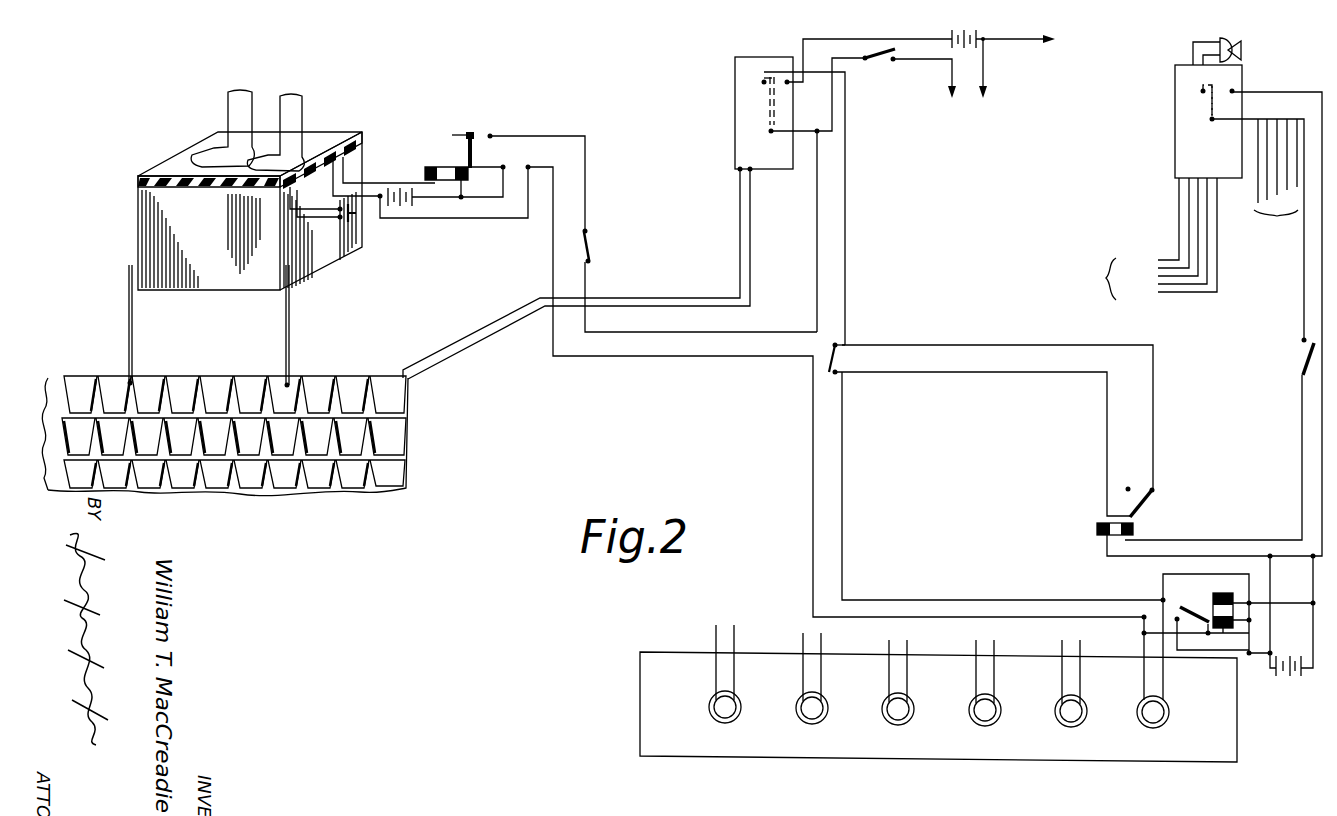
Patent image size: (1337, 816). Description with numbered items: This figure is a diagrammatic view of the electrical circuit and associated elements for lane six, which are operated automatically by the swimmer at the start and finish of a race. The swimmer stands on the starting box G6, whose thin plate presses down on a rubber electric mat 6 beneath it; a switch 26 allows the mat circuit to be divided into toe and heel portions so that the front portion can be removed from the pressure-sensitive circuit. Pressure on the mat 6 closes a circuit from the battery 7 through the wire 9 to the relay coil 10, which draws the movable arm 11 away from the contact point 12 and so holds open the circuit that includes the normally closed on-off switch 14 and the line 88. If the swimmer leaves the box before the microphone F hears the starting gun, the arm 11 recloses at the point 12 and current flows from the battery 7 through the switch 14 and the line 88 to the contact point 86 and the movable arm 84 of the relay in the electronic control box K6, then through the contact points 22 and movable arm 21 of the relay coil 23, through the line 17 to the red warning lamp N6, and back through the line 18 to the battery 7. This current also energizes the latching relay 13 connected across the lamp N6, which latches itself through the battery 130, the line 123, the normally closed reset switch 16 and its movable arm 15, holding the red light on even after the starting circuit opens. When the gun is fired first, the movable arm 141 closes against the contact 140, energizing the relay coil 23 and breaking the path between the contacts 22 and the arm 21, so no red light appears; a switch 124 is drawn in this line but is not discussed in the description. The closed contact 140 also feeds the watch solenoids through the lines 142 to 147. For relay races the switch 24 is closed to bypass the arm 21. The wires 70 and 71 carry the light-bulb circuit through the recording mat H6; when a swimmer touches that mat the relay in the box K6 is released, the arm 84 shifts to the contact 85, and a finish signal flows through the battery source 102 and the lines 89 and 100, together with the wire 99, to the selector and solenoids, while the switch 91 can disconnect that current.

The starting box G6 is at (325, 134).
The rubber electric mat 6 is at (352, 148).
The switch 26 is at (345, 238).
The battery 7 is at (398, 208).
The relay coil 10 is at (430, 167).
The movable arm 11 is at (480, 132).
The wire 9 is at (450, 218).
The contact point 12 is at (490, 134).
The on-off switch 14 is at (586, 246).
The line 18 is at (738, 356).
The wire 70 is at (458, 338).
The wire 71 is at (490, 322).
The recording mat H6 is at (420, 436).
The electronic control box K6 is at (735, 72).
The contact point 86 is at (764, 80).
The movable contact arm 84 is at (768, 98).
The contact 85 is at (842, 39).
The battery source 102 is at (940, 34).
The line 89 is at (997, 30).
The line 100 is at (985, 52).
The switch 91 is at (872, 64).
The wire 99 is at (950, 72).
The line 88 is at (815, 190).
The switch 24 is at (840, 358).
The line 17 is at (897, 380).
The contact points 22 is at (1155, 492).
The movable arm 21 is at (1145, 508).
The relay coil 23 is at (1096, 528).
The line 123 is at (1304, 447).
The switch 124 is at (1304, 312).
The contact 140 is at (1240, 88).
The movable arm 141 is at (1200, 106).
The microphone F is at (1242, 50).
The wire 142 is at (1158, 264).
The wire 147 is at (1158, 292).
The latching relay 13 is at (1224, 636).
The movable arm 15 is at (1196, 634).
The reset switch 16 is at (1262, 660).
The battery 130 is at (1282, 652).
The red light N6 is at (1162, 724).